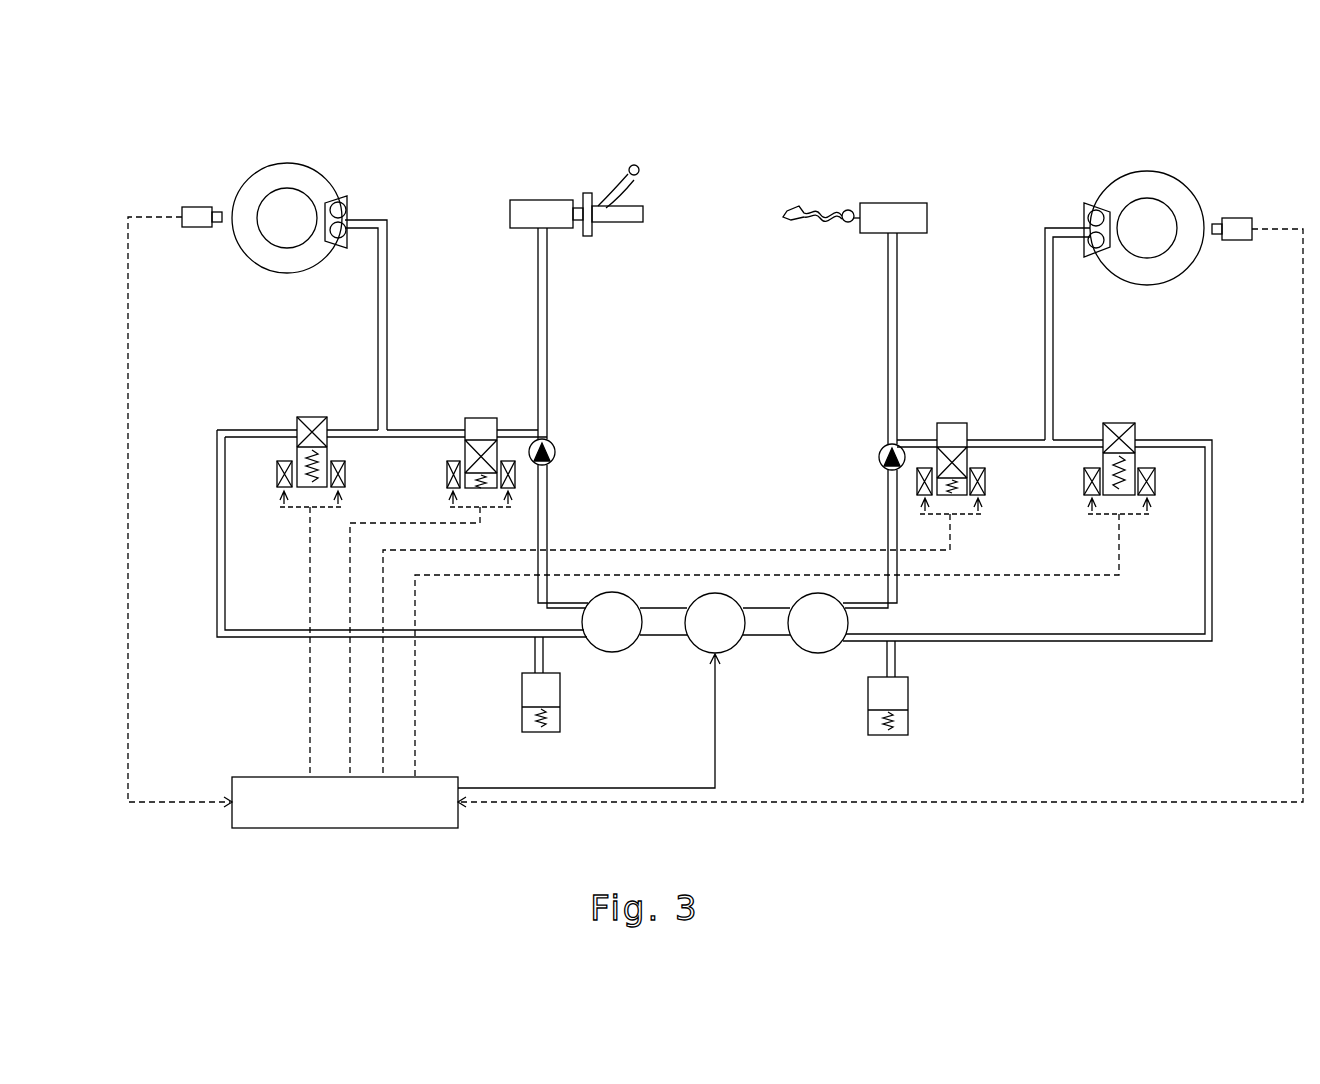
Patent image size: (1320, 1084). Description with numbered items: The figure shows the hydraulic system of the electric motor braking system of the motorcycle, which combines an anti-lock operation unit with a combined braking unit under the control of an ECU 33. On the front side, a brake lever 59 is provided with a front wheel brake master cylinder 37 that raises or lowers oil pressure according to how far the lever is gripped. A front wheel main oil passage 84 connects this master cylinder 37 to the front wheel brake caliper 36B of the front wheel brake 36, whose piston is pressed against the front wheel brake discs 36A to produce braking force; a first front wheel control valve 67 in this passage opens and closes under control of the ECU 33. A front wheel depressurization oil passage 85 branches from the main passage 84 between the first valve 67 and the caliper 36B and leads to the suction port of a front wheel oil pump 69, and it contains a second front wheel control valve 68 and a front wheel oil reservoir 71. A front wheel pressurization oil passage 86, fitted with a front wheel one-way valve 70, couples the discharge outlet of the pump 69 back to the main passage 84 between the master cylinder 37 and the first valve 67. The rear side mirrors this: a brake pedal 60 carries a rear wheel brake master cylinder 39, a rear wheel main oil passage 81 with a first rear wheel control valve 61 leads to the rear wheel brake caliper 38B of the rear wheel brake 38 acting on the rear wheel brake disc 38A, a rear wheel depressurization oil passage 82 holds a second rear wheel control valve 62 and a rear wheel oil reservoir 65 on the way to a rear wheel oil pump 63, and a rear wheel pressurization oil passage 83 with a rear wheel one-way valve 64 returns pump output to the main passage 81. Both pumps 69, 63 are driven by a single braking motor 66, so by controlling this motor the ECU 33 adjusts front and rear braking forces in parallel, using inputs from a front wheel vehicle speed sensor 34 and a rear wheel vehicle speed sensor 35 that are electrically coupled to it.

The ECU 33 is at (337, 828).
The front wheel vehicle speed sensor 34 is at (197, 206).
The rear wheel vehicle speed sensor 35 is at (1237, 218).
The front wheel brake 36 is at (287, 208).
The front wheel brake disc 36A is at (263, 262).
The front wheel brake caliper 36B is at (343, 250).
The front wheel brake master cylinder 37 is at (543, 200).
The rear wheel brake 38 is at (1139, 212).
The rear wheel brake disc 38A is at (1170, 262).
The rear wheel brake caliper 38B is at (1095, 262).
The rear wheel brake master cylinder 39 is at (893, 203).
The brake lever 59 is at (607, 193).
The brake pedal 60 is at (828, 208).
The first rear wheel control valve 61 is at (950, 423).
The second rear wheel control valve 62 is at (1120, 423).
The rear wheel oil pump 63 is at (818, 652).
The rear wheel one-way valve 64 is at (879, 455).
The rear wheel oil reservoir 65 is at (908, 715).
The braking motor 66 is at (727, 650).
The first front wheel control valve 67 is at (482, 418).
The second front wheel control valve 68 is at (310, 417).
The front wheel oil pump 69 is at (612, 652).
The front wheel one-way valve 70 is at (556, 450).
The front wheel oil reservoir 71 is at (522, 712).
The rear wheel main oil passage 81 is at (1045, 320).
The rear wheel depressurization oil passage 82 is at (1212, 523).
The rear wheel pressurization oil passage 83 is at (888, 517).
The front wheel main oil passage 84 is at (538, 316).
The front wheel depressurization oil passage 85 is at (217, 515).
The front wheel pressurization oil passage 86 is at (547, 517).